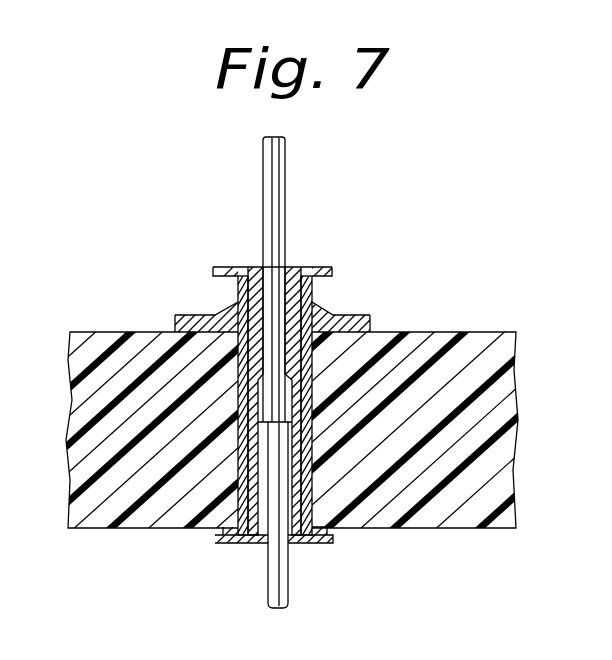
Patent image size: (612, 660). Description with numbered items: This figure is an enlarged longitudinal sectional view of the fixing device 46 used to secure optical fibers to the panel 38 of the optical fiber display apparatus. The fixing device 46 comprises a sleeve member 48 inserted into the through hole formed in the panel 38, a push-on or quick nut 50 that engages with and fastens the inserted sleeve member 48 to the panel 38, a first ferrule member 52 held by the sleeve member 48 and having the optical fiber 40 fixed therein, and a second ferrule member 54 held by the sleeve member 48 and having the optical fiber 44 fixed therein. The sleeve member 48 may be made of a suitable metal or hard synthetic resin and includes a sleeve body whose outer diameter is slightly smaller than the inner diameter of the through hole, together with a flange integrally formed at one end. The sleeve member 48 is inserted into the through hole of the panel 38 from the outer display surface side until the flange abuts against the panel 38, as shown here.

The panel 38 is at (488, 343).
The optical fiber 40 is at (285, 195).
The optical fiber 44 is at (288, 585).
The fixing device 46 is at (327, 296).
The sleeve member 48 is at (238, 291).
The quick nut 50 is at (363, 315).
The first ferrule member 52 is at (309, 264).
The second ferrule member 54 is at (313, 548).